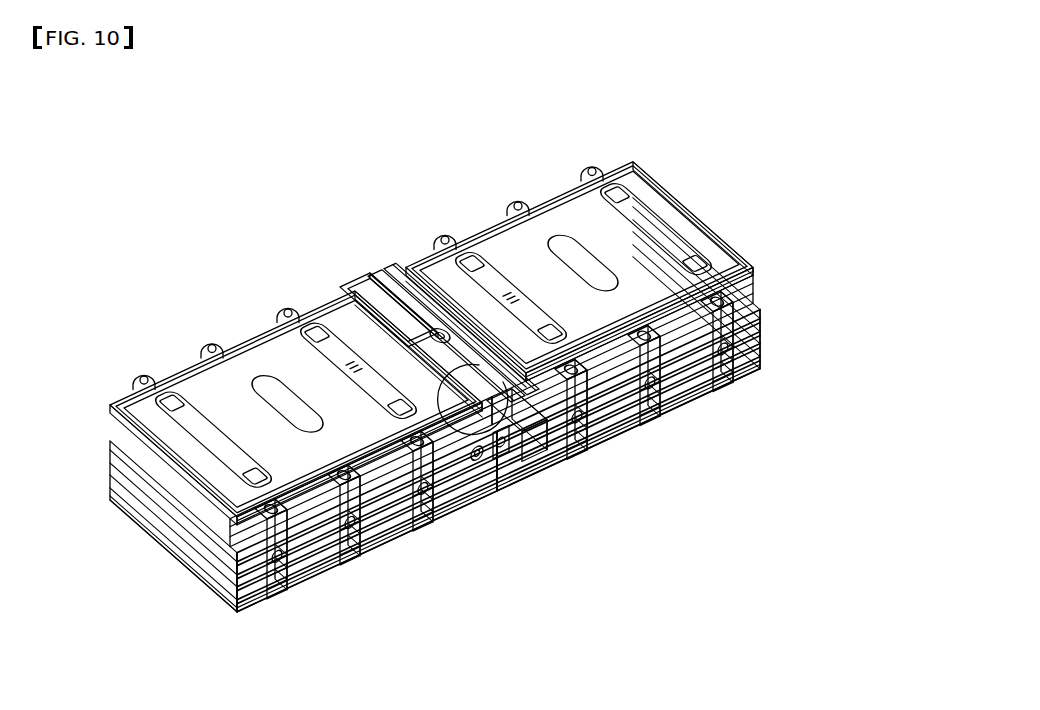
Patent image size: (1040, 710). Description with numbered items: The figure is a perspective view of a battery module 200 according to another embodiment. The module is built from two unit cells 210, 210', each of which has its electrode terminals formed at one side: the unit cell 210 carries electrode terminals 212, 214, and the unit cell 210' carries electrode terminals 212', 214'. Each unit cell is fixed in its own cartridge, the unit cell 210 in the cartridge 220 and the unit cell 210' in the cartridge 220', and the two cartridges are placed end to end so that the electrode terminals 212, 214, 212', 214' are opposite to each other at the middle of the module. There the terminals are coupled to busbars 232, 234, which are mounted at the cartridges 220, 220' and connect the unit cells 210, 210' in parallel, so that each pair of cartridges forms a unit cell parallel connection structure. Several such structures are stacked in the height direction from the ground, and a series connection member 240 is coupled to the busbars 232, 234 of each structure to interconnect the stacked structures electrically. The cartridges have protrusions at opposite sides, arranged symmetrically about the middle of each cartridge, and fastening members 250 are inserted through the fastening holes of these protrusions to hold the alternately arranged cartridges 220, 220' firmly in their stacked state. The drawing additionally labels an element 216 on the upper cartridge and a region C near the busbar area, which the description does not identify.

The battery module 200 is at (163, 165).
The unit cell 210 is at (296, 408).
The unit cell 210' is at (579, 246).
The electrode terminal 212 is at (395, 336).
The electrode terminal 212' is at (465, 305).
The electrode terminal 214 is at (398, 350).
The electrode terminal 214' is at (461, 290).
The upper plate frame rim 216 is at (265, 335).
The cartridge 220 is at (269, 487).
The cartridge 220' is at (678, 344).
The busbar 232 is at (402, 300).
The busbar 234 is at (535, 445).
The series connection member 240 is at (500, 466).
The fastening member 250 is at (273, 548).
The coupling portion C is at (503, 475).